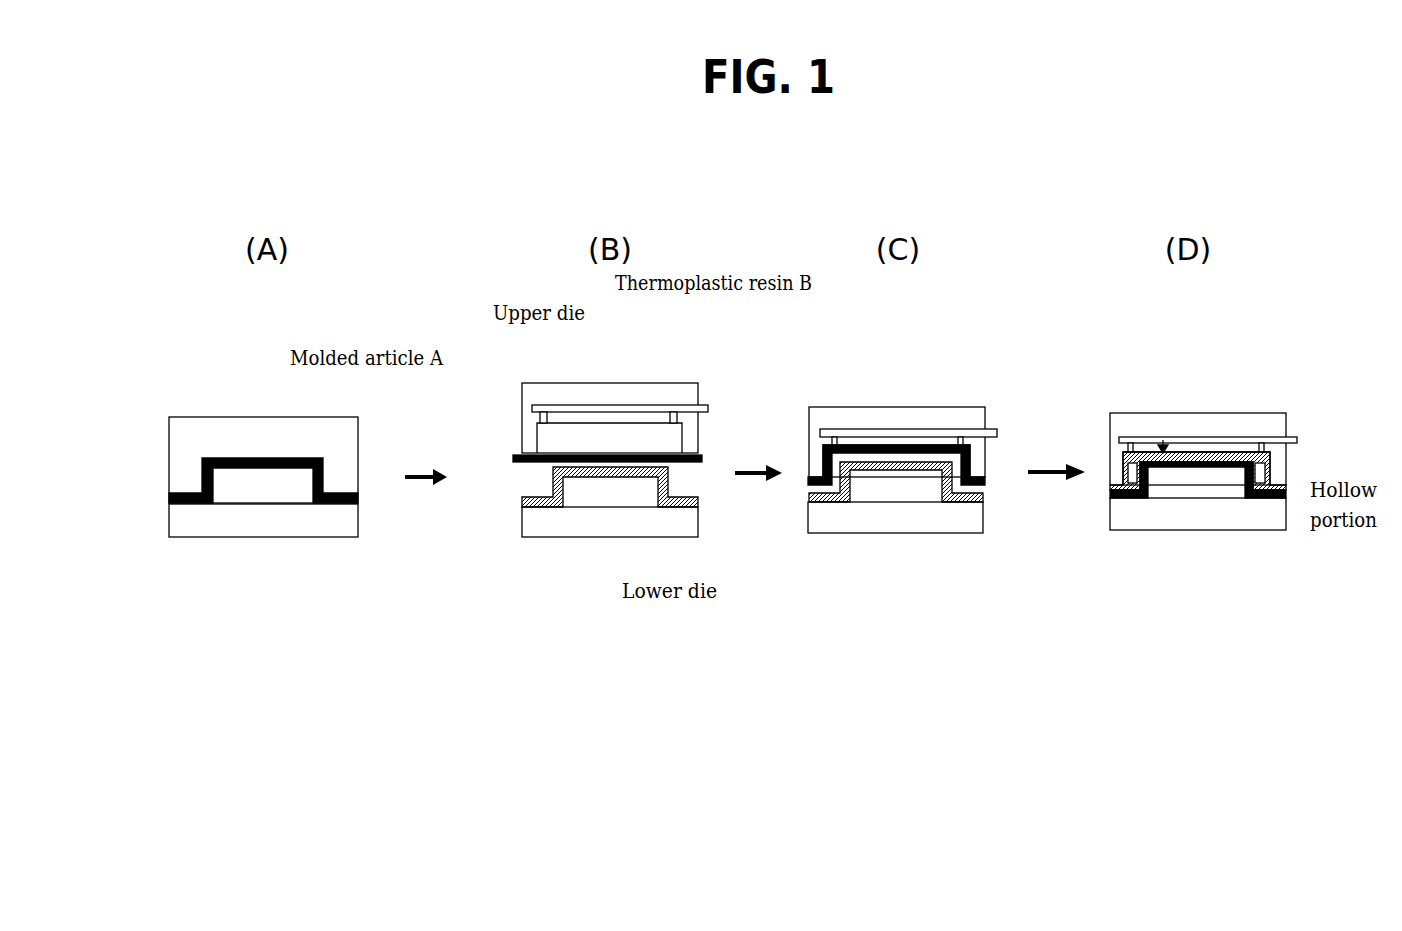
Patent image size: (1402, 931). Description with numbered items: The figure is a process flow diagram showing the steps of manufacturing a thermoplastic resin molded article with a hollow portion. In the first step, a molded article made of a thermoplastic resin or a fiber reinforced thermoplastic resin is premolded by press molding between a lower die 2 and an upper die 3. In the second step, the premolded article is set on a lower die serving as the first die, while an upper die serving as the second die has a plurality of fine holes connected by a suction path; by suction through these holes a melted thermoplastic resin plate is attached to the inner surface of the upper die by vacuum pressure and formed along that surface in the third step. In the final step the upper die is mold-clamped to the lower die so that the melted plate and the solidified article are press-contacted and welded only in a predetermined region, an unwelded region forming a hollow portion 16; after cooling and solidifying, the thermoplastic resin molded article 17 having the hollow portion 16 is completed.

The lower die 2 is at (263, 520).
The upper die 3 is at (210, 432).
The hollow portion 16 is at (1260, 473).
The thermoplastic resin molded article 17 is at (1163, 440).